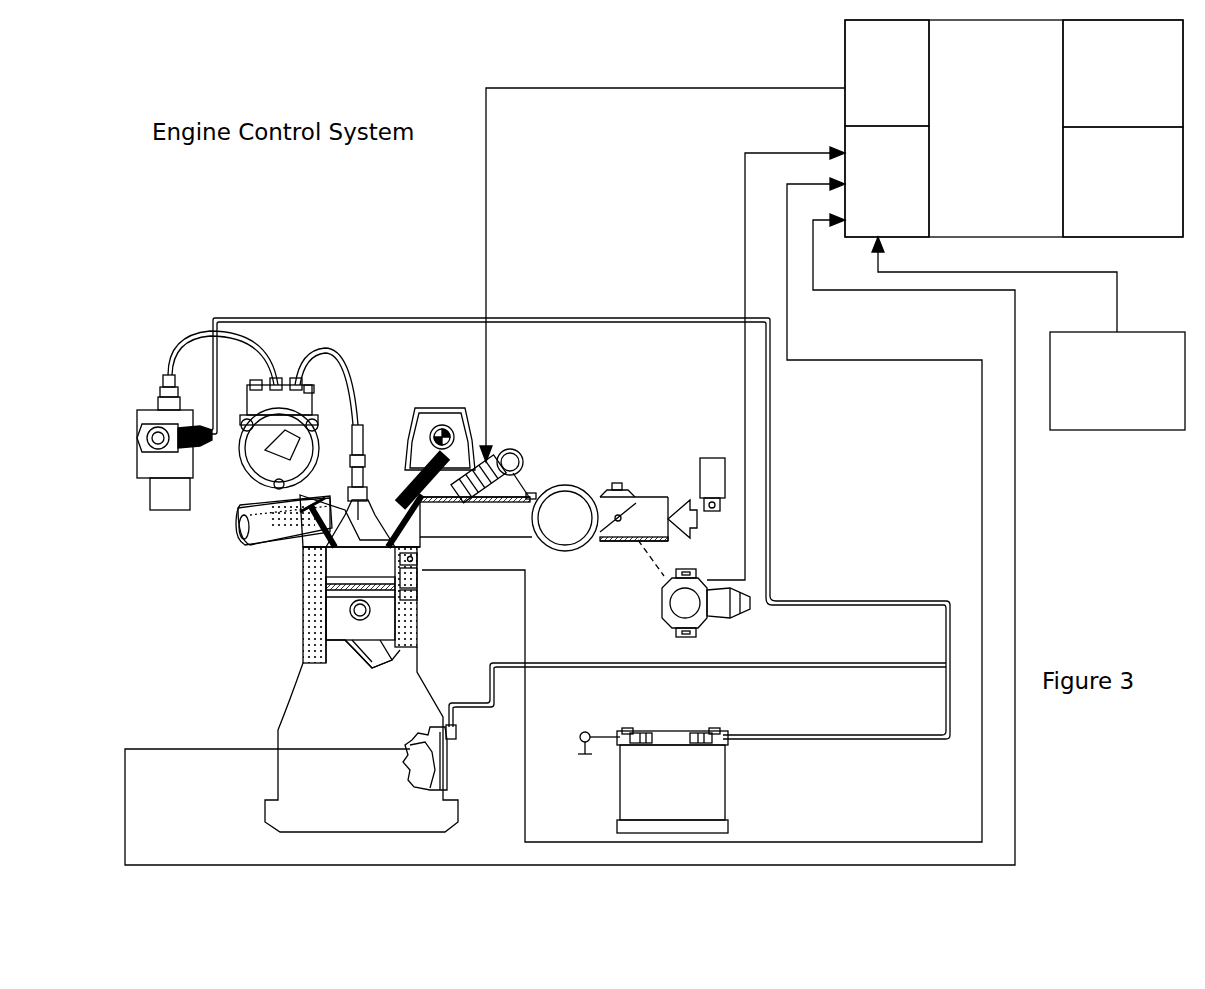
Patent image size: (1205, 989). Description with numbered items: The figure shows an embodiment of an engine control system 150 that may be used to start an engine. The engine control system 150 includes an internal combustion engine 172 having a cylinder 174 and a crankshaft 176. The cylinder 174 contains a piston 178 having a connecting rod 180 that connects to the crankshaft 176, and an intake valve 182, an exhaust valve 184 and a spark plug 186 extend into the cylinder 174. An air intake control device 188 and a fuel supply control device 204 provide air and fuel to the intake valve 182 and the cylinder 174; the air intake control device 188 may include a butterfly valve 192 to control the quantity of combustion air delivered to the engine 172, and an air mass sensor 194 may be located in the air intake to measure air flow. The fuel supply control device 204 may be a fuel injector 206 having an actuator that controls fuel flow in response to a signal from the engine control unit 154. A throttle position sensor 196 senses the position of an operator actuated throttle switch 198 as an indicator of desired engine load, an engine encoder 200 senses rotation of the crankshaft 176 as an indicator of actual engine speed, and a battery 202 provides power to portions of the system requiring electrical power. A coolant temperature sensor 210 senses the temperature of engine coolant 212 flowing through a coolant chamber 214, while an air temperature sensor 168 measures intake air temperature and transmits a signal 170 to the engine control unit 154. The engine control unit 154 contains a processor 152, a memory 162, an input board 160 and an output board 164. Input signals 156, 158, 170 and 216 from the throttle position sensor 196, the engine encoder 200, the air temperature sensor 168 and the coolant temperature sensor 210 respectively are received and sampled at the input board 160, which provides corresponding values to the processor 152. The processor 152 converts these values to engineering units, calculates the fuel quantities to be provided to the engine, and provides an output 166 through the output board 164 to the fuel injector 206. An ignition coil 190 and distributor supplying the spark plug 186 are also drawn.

The engine control system 150 is at (272, 200).
The processor 152 is at (1123, 73).
The engine control unit 154 is at (1014, 128).
The input signal 156 is at (745, 203).
The input signal 158 is at (893, 292).
The input board 160 is at (887, 181).
The memory 162 is at (1123, 182).
The output board 164 is at (887, 73).
The output 166 is at (575, 88).
The air temperature sensor 168 is at (1117, 381).
The signal 170 is at (1118, 288).
The internal combustion engine 172 is at (361, 689).
The cylinder 174 is at (340, 510).
The crankshaft 176 is at (432, 776).
The piston 178 is at (418, 612).
The connecting rod 180 is at (340, 647).
The intake valve 182 is at (398, 480).
The exhaust valve 184 is at (303, 550).
The spark plug 186 is at (352, 488).
The air intake control device 188 is at (630, 512).
The ignition coil 190 is at (194, 462).
The butterfly valve 192 is at (617, 524).
The air mass sensor 194 is at (704, 457).
The throttle position sensor 196 is at (742, 614).
The throttle switch 198 is at (661, 598).
The engine encoder 200 is at (425, 758).
The battery 202 is at (653, 769).
The fuel supply control device 204 is at (512, 450).
The fuel injector 206 is at (522, 462).
The coolant temperature sensor 210 is at (420, 565).
The engine coolant 212 is at (420, 578).
The coolant chamber 214 is at (420, 595).
The input signal 216 is at (870, 362).